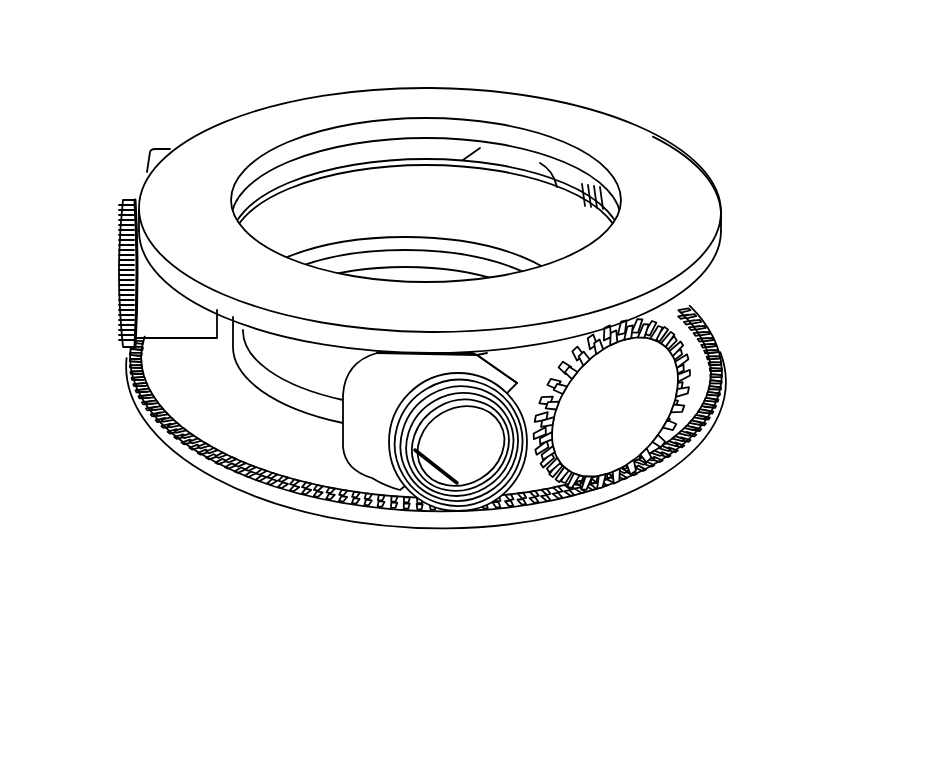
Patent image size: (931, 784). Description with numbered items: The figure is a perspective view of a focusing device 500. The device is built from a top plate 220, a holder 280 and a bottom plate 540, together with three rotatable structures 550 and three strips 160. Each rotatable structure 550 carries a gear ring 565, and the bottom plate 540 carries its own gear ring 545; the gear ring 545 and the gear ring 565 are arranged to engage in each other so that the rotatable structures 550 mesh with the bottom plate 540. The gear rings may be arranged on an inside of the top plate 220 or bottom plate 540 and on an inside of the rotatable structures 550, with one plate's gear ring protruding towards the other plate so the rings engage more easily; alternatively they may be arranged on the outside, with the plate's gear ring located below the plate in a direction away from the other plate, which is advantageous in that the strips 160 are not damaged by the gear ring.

The focusing device 500 is at (427, 298).
The top plate 220 is at (676, 195).
The holder 280 is at (283, 213).
The gear ring 565 is at (114, 281).
The gear ring 545 is at (722, 363).
The bottom plate 540 is at (226, 422).
The rotatable structure 550 is at (607, 437).
The strip 160 is at (380, 453).